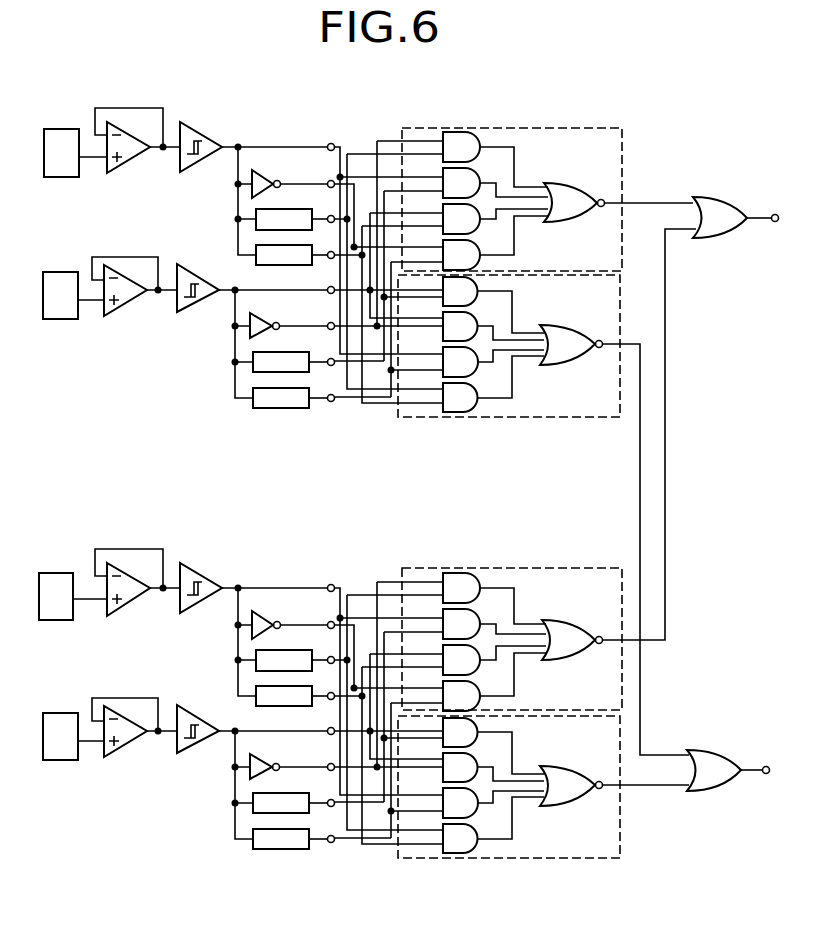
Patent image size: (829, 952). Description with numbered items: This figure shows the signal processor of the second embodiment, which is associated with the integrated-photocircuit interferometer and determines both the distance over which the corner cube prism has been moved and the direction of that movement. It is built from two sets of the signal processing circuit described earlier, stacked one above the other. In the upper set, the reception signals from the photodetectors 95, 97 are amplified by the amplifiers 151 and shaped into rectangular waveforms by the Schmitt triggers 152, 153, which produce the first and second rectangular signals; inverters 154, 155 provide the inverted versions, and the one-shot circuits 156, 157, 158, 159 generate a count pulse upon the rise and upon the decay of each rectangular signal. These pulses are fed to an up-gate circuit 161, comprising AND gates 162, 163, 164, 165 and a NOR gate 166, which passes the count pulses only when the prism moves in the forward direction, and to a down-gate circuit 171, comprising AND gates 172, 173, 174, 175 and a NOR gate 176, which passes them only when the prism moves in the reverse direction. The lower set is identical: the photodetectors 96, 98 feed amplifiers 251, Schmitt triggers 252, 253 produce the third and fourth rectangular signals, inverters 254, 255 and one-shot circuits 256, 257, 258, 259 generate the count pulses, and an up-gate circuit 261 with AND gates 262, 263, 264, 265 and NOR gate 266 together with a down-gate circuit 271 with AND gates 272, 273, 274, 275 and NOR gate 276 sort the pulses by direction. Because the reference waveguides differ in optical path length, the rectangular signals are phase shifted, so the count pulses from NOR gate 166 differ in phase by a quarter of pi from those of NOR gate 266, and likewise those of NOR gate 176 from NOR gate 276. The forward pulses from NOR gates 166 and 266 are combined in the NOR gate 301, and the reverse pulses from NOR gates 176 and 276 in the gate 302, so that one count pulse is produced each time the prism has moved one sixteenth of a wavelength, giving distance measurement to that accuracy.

The photodetector 95 is at (61, 177).
The photodetector 96 is at (54, 572).
The photodetector 97 is at (60, 319).
The photodetector 98 is at (60, 764).
The amplifier 151 is at (128, 165).
The Schmitt trigger 152 is at (203, 132).
The Schmitt trigger 153 is at (192, 305).
The inverter 154 is at (262, 175).
The inverter 155 is at (263, 316).
The one-shot circuit 156 is at (276, 217).
The one-shot circuit 157 is at (297, 366).
The one-shot circuit 158 is at (265, 264).
The one-shot circuit 159 is at (285, 402).
The up-gate circuit 161 is at (527, 128).
The AND gate 162 is at (456, 141).
The AND gate 163 is at (473, 180).
The AND gate 164 is at (472, 228).
The AND gate 165 is at (475, 261).
The NOR gate 166 is at (575, 190).
The down-gate circuit 171 is at (562, 418).
The AND gate 172 is at (480, 286).
The AND gate 173 is at (473, 323).
The AND gate 174 is at (472, 370).
The AND gate 175 is at (468, 407).
The NOR gate 176 is at (582, 337).
The amplifier 251 is at (126, 671).
The Schmitt trigger 252 is at (209, 574).
The Schmitt trigger 253 is at (196, 710).
The inverter 254 is at (293, 601).
The inverter 255 is at (292, 760).
The one-shot circuit 256 is at (295, 649).
The one-shot circuit 257 is at (294, 791).
The one-shot circuit 258 is at (295, 709).
The one-shot circuit 259 is at (294, 862).
The up-gate circuit 261 is at (512, 622).
The AND gate 262 is at (487, 579).
The AND gate 263 is at (499, 607).
The AND gate 264 is at (499, 667).
The AND gate 265 is at (501, 682).
The NOR gate 266 is at (574, 622).
The down-gate circuit 271 is at (509, 805).
The AND gate 272 is at (500, 746).
The AND gate 273 is at (500, 760).
The AND gate 274 is at (497, 812).
The AND gate 275 is at (493, 846).
The NOR gate 276 is at (572, 803).
The NOR gate 301 is at (717, 231).
The NOR gate 302 is at (708, 792).